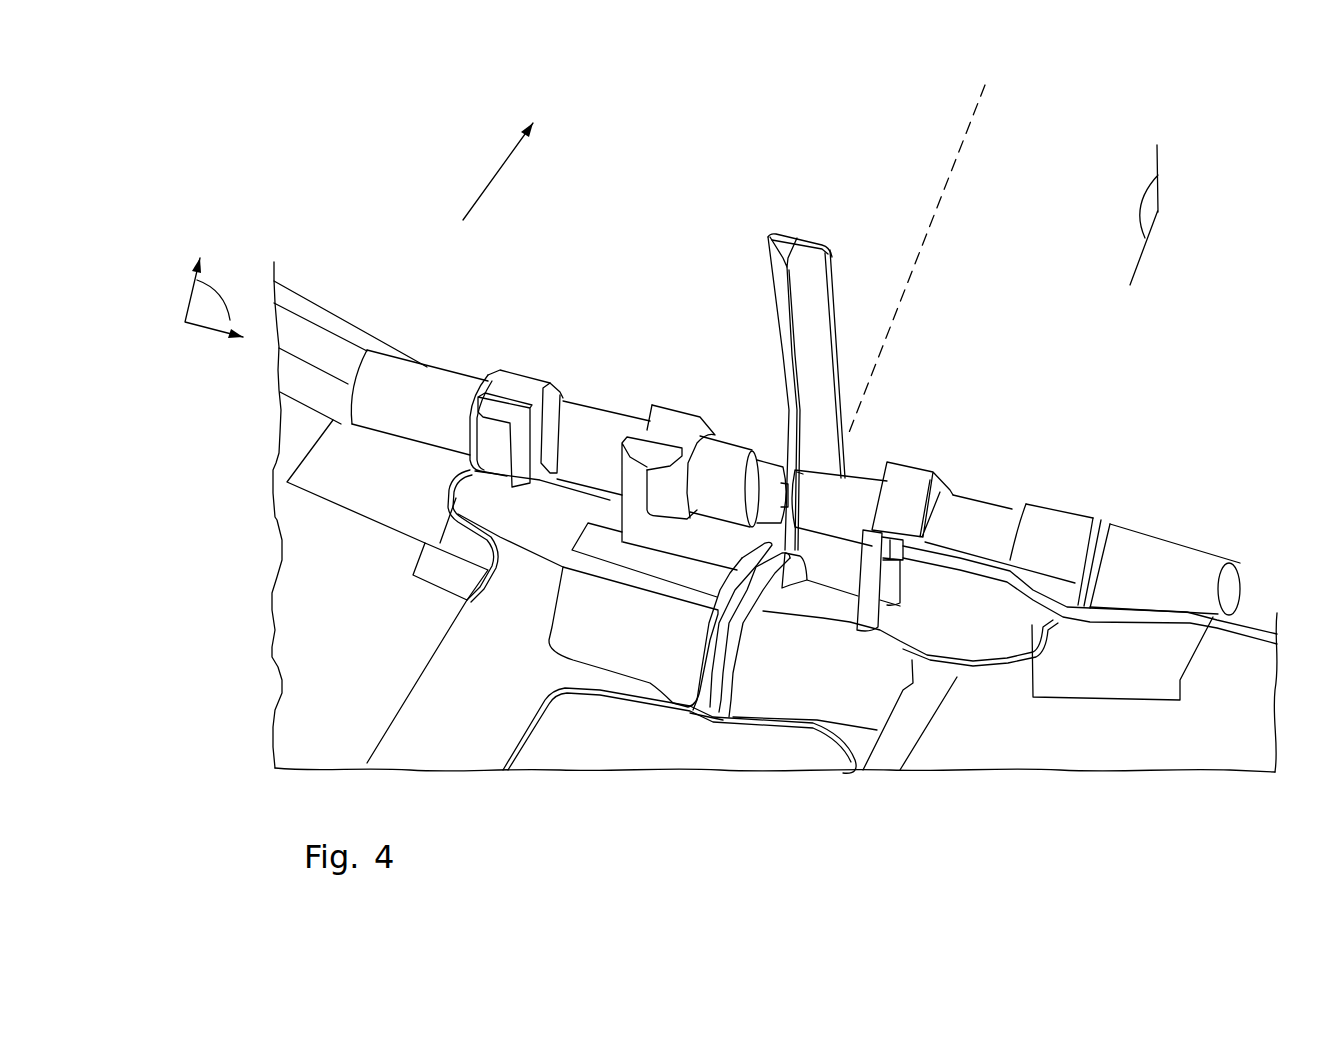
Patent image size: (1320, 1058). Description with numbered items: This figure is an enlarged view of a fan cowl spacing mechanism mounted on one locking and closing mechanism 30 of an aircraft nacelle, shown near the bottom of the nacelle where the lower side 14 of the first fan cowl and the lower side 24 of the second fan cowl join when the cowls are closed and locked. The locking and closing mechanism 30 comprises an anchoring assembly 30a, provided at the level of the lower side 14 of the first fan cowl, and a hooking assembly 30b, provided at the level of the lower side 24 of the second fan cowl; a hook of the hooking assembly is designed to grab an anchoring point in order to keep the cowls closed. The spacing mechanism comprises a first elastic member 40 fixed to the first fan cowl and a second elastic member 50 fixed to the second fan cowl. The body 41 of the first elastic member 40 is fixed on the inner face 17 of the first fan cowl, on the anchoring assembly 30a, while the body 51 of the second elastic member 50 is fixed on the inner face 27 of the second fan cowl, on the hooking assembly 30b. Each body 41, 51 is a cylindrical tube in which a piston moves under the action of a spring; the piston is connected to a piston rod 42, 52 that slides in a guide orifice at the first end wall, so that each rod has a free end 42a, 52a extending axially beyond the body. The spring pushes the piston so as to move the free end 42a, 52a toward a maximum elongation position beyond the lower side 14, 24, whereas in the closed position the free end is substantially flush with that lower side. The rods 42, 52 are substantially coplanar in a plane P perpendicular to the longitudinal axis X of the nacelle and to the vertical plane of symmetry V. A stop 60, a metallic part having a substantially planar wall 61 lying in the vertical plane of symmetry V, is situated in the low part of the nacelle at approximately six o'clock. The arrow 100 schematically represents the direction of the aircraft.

The lower side 14 is at (704, 748).
The inner face 17 is at (310, 654).
The lower side 24 is at (700, 748).
The inner face 27 is at (1113, 720).
The locking and closing mechanism 30 is at (770, 745).
The anchoring assembly 30a is at (600, 612).
The hooking assembly 30b is at (857, 667).
The first elastic member 40 is at (583, 372).
The body 41 is at (607, 405).
The piston rod 42 is at (753, 447).
The free end 42a is at (766, 440).
The second elastic member 50 is at (1010, 482).
The body 51 is at (997, 517).
The piston rod 52 is at (820, 497).
The free end 52a is at (795, 472).
The stop 60 is at (827, 247).
The wall 61 is at (797, 297).
The arrow 100 is at (500, 170).
The longitudinal axis X is at (995, 72).
The vertical plane of symmetry V is at (1133, 213).
The plane P is at (190, 292).